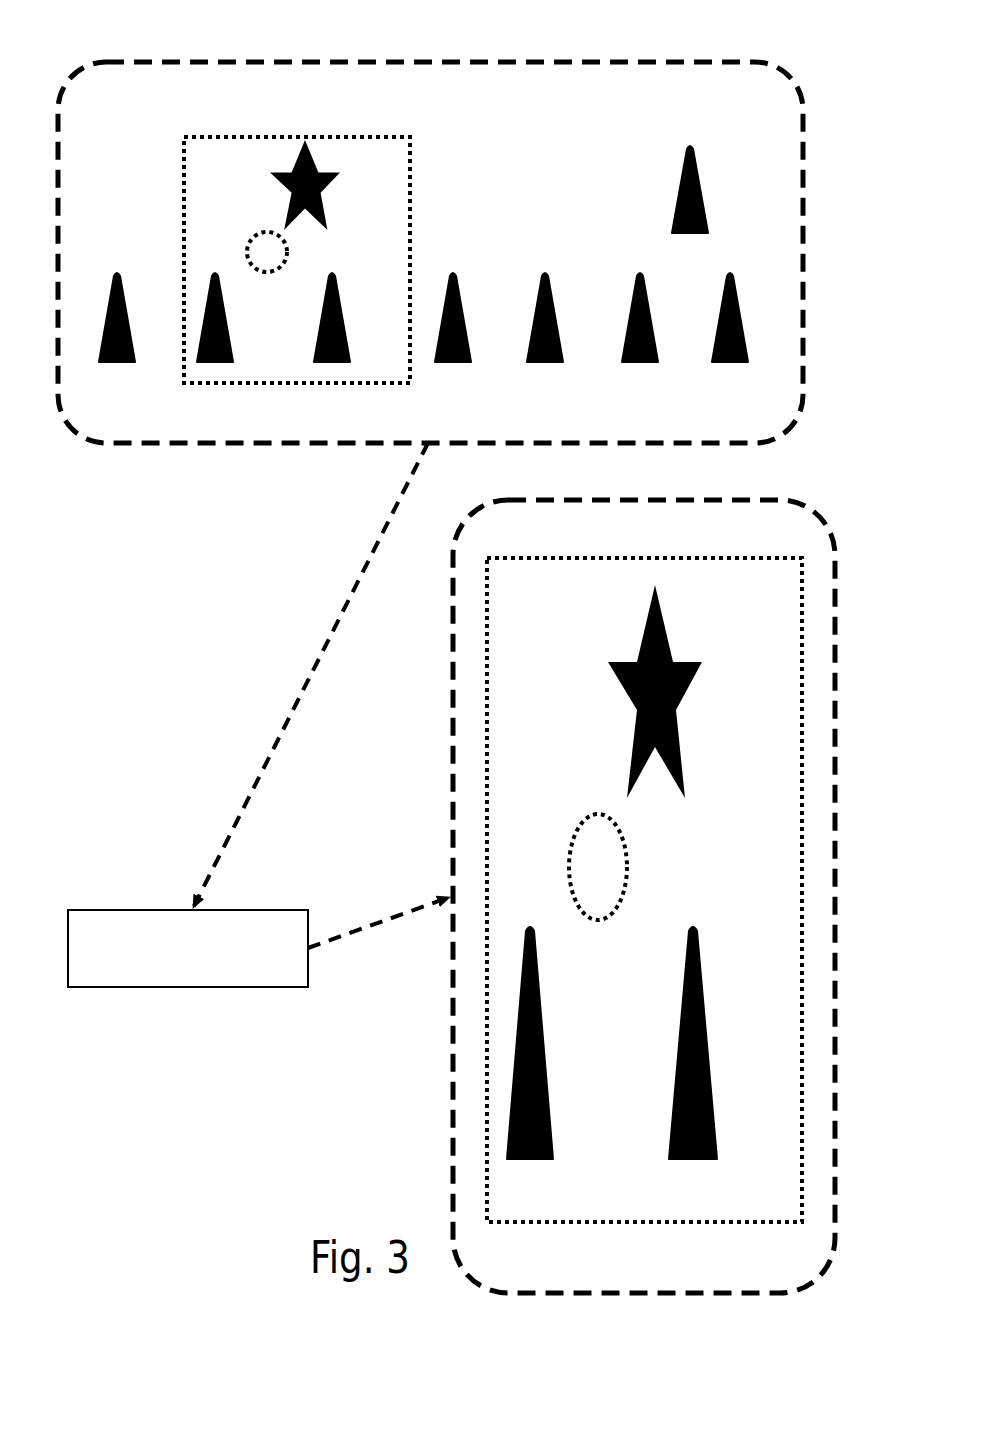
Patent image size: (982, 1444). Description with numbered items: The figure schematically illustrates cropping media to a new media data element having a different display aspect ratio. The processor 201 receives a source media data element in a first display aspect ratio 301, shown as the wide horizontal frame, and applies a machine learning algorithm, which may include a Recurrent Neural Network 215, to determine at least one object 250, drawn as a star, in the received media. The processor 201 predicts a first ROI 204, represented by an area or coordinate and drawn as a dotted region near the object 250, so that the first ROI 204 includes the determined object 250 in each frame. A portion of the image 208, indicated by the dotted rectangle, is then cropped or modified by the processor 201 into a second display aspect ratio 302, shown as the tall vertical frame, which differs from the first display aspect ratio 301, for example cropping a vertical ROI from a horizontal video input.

The processor 201 is at (240, 988).
The first ROI 204 is at (245, 252).
The image 208 is at (412, 203).
The Recurrent Neural Network 215 is at (793, 88).
The object 250 is at (288, 175).
The first display aspect ratio 301 is at (180, 486).
The second display aspect ratio 302 is at (430, 1121).